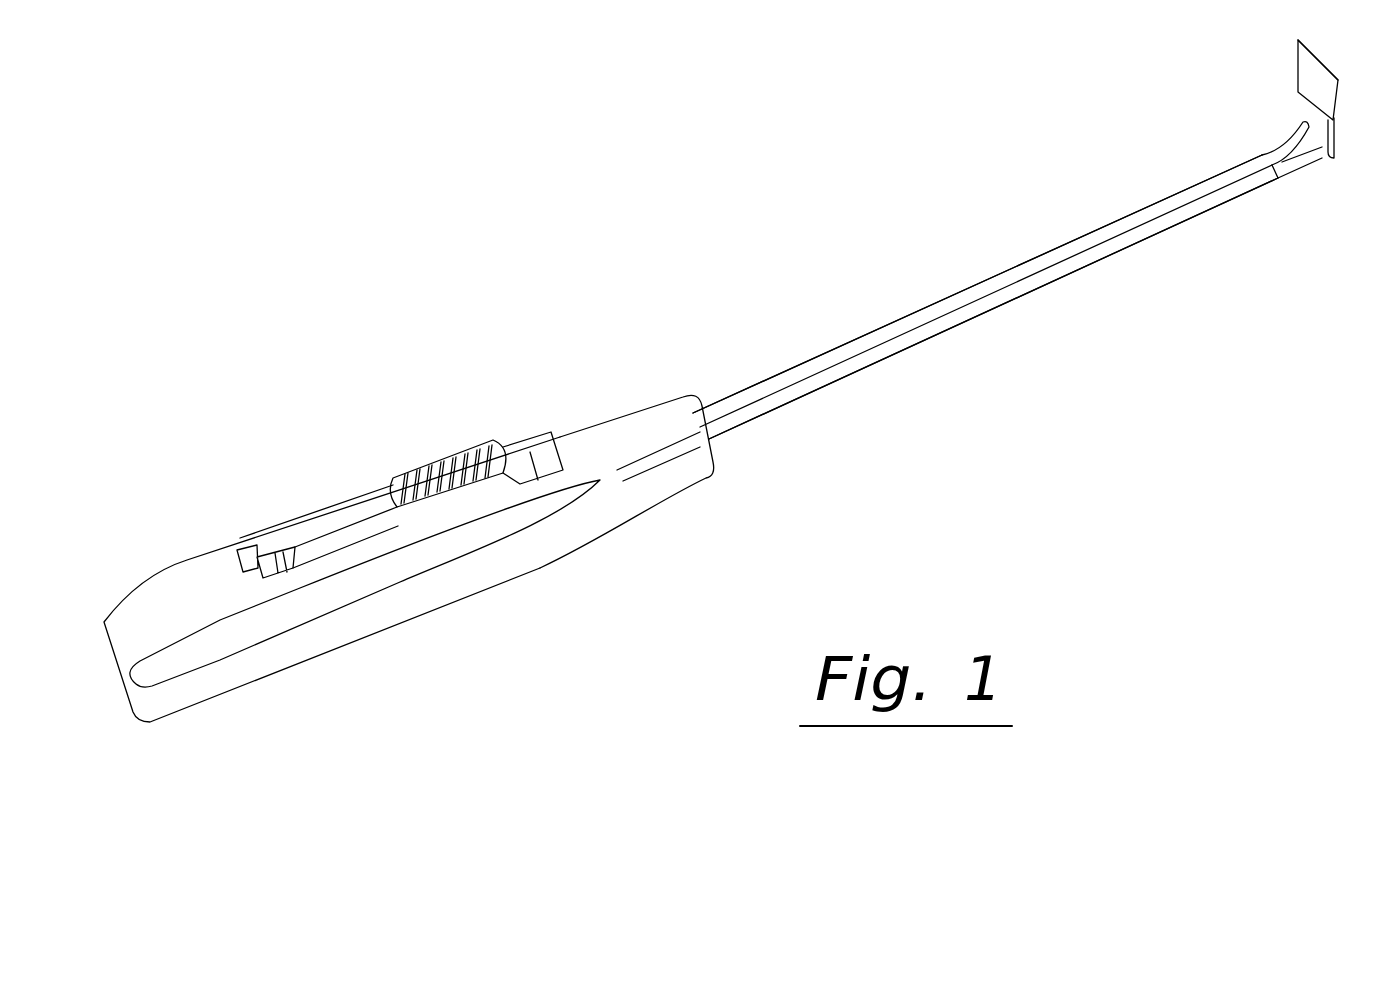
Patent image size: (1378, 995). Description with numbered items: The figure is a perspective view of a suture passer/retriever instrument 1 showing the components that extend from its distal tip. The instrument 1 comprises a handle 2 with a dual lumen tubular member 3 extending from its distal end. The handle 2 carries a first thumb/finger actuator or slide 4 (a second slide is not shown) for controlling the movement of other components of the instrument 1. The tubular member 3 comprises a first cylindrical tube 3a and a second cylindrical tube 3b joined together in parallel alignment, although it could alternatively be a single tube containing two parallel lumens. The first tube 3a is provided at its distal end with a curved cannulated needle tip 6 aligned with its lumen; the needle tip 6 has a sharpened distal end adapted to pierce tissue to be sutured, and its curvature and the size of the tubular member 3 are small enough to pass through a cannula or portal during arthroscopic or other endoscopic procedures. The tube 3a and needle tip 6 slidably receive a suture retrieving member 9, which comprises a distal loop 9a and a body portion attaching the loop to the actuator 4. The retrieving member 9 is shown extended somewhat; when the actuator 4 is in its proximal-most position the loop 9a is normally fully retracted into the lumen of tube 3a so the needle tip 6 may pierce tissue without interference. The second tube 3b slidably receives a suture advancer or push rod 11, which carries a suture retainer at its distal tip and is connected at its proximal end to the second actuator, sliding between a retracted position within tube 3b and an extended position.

The suture passer/retriever instrument 1 is at (671, 390).
The handle 2 is at (191, 544).
The tubular member 3 is at (900, 294).
The first cylindrical tube 3a is at (1097, 262).
The second cylindrical tube 3b is at (1097, 227).
The thumb/finger actuator or slide 4 is at (495, 425).
The curved cannulated needle tip 6 is at (1331, 167).
The suture retrieving member 9 is at (1294, 70).
The distal loop 9a is at (1298, 40).
The suture advancer or push rod 11 is at (1283, 135).